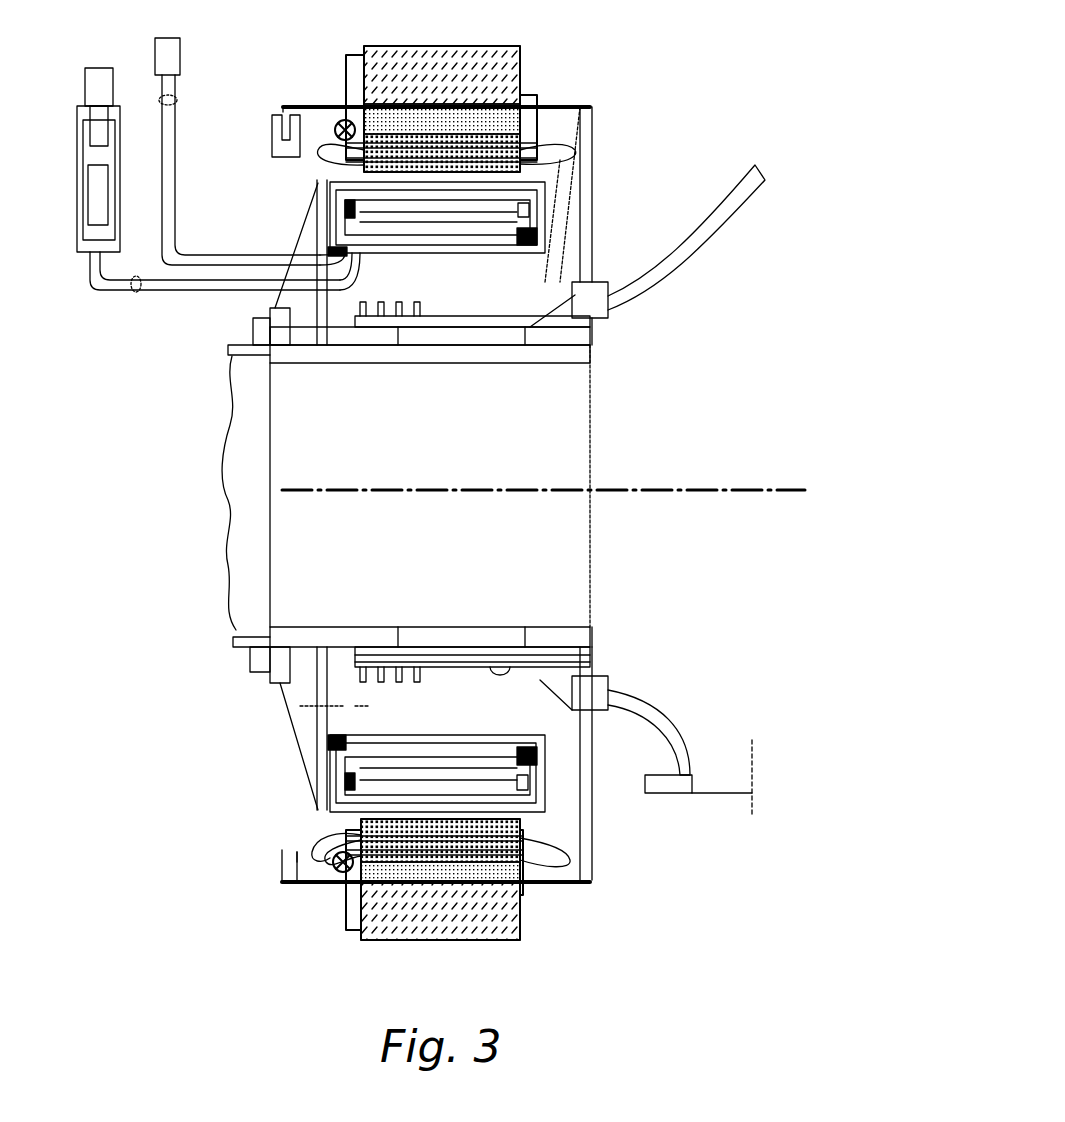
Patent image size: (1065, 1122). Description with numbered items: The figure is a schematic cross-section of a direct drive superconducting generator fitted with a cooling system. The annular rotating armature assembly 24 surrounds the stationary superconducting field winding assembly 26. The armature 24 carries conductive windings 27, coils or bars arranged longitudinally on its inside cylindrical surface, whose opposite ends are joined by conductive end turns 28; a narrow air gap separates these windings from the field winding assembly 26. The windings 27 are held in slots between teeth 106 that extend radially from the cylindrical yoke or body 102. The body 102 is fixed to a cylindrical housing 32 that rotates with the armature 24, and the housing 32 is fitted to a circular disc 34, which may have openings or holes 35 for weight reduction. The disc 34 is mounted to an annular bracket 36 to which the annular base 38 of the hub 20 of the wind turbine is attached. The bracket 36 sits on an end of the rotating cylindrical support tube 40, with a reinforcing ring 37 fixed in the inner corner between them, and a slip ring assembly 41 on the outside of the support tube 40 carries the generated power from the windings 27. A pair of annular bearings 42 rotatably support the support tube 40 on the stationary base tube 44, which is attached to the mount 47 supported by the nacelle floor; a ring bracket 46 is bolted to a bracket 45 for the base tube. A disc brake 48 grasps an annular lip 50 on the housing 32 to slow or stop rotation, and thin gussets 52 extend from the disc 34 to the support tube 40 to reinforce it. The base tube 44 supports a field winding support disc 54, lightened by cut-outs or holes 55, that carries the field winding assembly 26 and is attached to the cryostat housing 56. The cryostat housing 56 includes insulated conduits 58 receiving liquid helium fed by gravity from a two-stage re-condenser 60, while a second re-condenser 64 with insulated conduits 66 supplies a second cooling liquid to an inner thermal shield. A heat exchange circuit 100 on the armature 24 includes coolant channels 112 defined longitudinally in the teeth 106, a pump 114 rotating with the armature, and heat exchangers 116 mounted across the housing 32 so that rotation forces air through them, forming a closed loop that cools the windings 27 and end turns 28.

The hub 20 is at (756, 182).
The annular rotating armature assembly 24 is at (552, 128).
The stationary superconducting field winding assembly 26 is at (546, 194).
The conductive windings 27 is at (596, 122).
The conductive end turns 28 is at (320, 160).
The cylindrical housing 32 is at (305, 890).
The circular disc 34 is at (593, 200).
The openings or holes 35 is at (596, 800).
The annular bracket 36 is at (594, 336).
The reinforcing ring 37 is at (545, 315).
The annular base 38 is at (612, 306).
The rotating cylindrical support tube 40 is at (490, 330).
The slip ring assembly 41 is at (426, 312).
The annular bearings 42 is at (370, 346).
The stationary base tube 44 is at (310, 362).
The bracket for the base tube 45 is at (252, 660).
The ring bracket 46 is at (258, 650).
The mount 47 is at (226, 445).
The disc brake 48 is at (272, 140).
The annular lip 50 is at (282, 110).
The gussets 52 is at (566, 262).
The field winding support disc 54 is at (320, 660).
The cut-outs or holes 55 is at (317, 726).
The cryostat housing 56 is at (538, 236).
The insulated conduits 58 is at (138, 292).
The two-stage re-condenser 60 is at (77, 222).
The second re-condenser 64 is at (155, 60).
The insulated conduits 66 is at (177, 106).
The heat exchange circuit 100 is at (556, 62).
The cylindrical yoke or body 102 is at (388, 122).
The teeth 106 is at (520, 896).
The coolant channels 112 is at (410, 842).
The pump 114 is at (318, 850).
The heat exchanger 116 is at (400, 64).